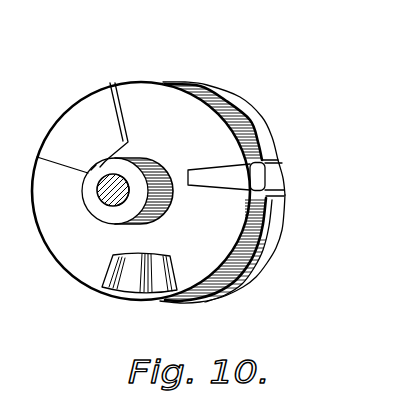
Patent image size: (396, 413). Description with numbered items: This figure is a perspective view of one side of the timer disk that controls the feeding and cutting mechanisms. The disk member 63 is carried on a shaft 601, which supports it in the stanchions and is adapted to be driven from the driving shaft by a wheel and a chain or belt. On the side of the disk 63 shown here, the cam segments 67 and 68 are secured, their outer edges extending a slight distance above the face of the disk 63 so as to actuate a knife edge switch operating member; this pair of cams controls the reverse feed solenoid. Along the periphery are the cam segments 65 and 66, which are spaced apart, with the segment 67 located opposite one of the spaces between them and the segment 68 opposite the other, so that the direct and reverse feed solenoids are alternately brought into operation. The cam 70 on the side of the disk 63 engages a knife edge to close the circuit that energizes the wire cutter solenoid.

The disk member 63 is at (140, 92).
The cam segment 68 is at (73, 109).
The shaft 601 is at (110, 200).
The cam segment 65 is at (273, 151).
The cam segment 67 is at (240, 177).
The cam segment 66 is at (275, 229).
The cam 70 is at (121, 283).